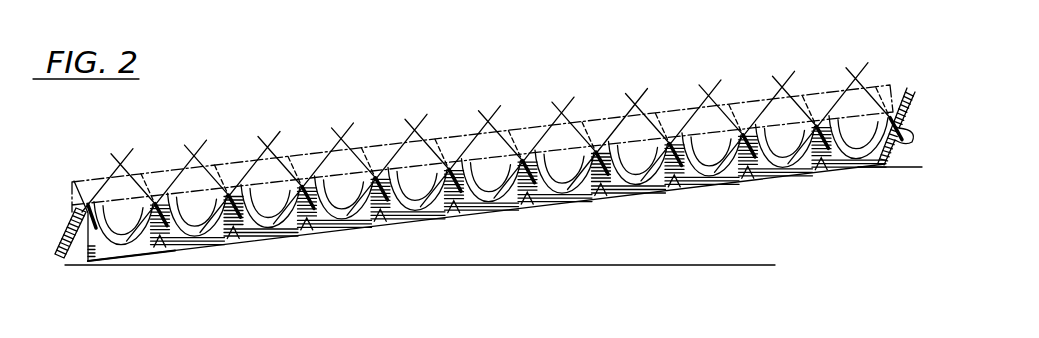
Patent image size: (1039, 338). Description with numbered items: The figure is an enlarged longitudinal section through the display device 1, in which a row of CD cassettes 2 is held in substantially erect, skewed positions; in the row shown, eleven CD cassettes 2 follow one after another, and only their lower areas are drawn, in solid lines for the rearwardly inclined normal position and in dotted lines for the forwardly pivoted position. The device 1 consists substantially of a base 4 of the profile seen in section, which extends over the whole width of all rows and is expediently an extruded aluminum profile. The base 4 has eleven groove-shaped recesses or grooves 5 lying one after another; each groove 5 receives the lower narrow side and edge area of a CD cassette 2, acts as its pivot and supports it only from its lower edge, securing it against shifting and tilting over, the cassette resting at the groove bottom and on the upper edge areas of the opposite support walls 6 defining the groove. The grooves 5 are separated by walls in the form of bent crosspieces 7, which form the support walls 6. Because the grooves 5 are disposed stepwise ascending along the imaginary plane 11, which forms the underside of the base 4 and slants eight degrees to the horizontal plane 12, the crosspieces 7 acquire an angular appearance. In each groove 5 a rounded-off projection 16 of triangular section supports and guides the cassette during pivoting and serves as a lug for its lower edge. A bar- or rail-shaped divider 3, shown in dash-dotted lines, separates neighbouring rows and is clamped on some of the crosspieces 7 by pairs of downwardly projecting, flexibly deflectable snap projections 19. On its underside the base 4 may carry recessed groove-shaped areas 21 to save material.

The device 1 is at (924, 107).
The CD cassette 2 is at (121, 208).
The divider 3 is at (610, 123).
The base 4 is at (880, 162).
The groove 5 is at (112, 212).
The support wall 6 is at (464, 140).
The crosspiece 7 is at (612, 190).
The imaginary plane 11 is at (913, 167).
The horizontal plane 12 is at (713, 265).
The projection 16 is at (410, 205).
The snap projection 19 is at (90, 220).
The recessed groove-shaped area 21 is at (532, 203).